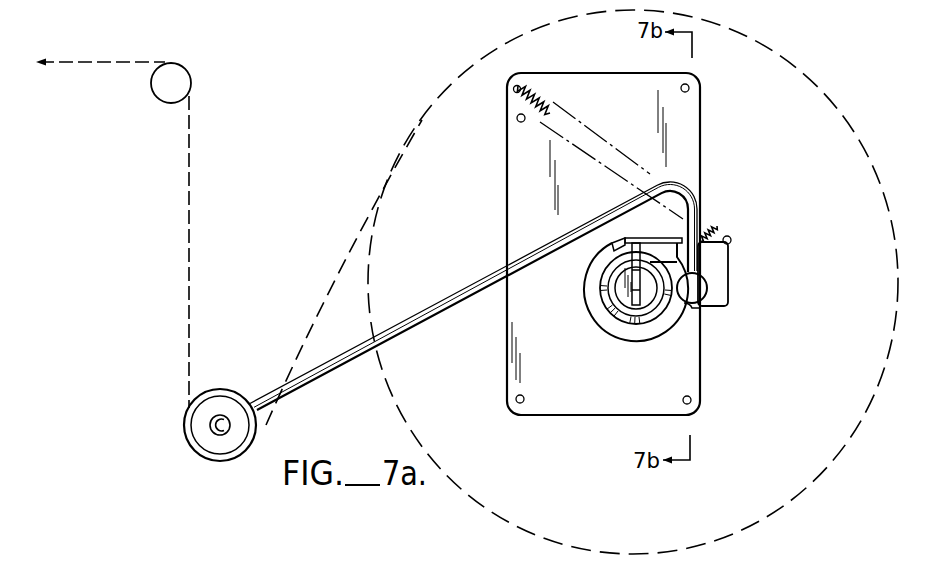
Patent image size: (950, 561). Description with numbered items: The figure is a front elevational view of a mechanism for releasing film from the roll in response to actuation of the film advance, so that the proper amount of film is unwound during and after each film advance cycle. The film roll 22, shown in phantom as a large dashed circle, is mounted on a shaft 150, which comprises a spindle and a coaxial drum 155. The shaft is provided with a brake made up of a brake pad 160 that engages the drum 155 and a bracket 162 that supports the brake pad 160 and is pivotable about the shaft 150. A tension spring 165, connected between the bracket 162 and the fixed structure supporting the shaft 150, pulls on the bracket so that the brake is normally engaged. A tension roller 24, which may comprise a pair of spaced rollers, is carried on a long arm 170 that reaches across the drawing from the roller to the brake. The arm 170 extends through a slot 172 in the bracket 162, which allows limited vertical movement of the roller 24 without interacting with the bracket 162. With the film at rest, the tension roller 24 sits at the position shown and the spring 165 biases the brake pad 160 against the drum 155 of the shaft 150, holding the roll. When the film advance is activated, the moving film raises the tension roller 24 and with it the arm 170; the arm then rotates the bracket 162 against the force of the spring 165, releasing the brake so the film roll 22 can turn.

The film roll 22 is at (783, 57).
The tension roller 24 is at (213, 400).
The shaft 150 is at (623, 293).
The drum 155 is at (603, 283).
The brake pad 160 is at (621, 240).
The bracket 162 is at (717, 263).
The tension spring 165 is at (541, 90).
The arm 170 is at (449, 296).
The slot 172 is at (708, 233).